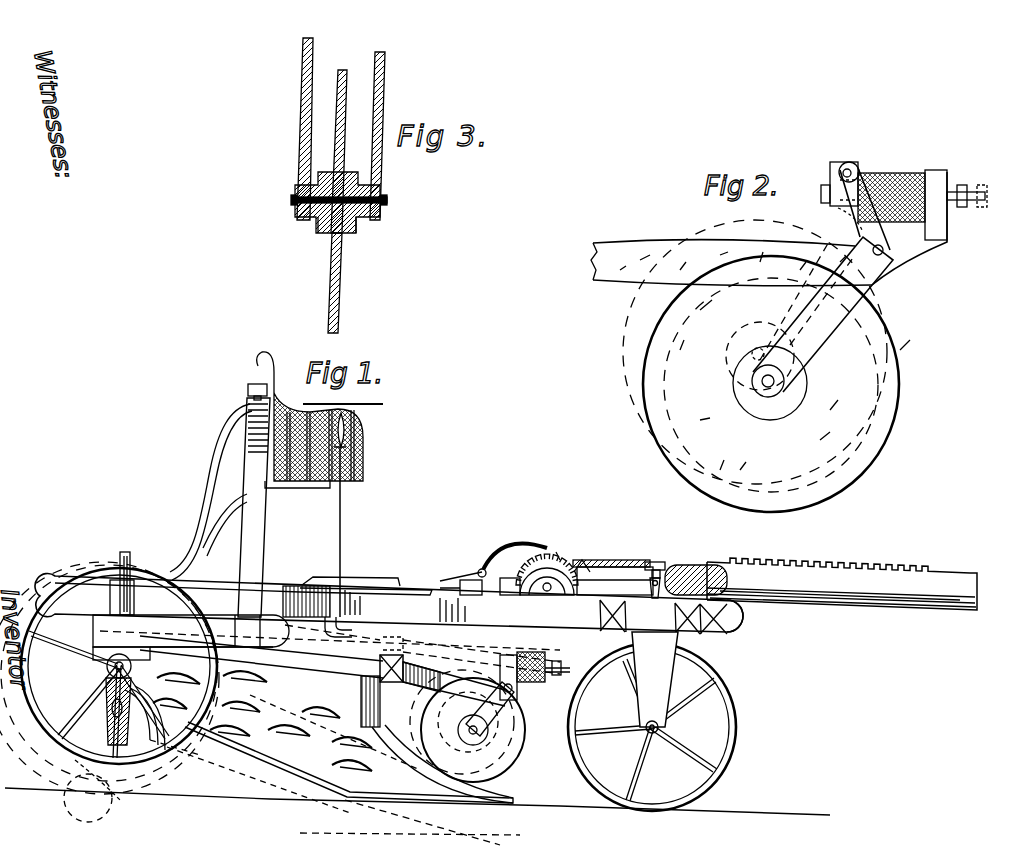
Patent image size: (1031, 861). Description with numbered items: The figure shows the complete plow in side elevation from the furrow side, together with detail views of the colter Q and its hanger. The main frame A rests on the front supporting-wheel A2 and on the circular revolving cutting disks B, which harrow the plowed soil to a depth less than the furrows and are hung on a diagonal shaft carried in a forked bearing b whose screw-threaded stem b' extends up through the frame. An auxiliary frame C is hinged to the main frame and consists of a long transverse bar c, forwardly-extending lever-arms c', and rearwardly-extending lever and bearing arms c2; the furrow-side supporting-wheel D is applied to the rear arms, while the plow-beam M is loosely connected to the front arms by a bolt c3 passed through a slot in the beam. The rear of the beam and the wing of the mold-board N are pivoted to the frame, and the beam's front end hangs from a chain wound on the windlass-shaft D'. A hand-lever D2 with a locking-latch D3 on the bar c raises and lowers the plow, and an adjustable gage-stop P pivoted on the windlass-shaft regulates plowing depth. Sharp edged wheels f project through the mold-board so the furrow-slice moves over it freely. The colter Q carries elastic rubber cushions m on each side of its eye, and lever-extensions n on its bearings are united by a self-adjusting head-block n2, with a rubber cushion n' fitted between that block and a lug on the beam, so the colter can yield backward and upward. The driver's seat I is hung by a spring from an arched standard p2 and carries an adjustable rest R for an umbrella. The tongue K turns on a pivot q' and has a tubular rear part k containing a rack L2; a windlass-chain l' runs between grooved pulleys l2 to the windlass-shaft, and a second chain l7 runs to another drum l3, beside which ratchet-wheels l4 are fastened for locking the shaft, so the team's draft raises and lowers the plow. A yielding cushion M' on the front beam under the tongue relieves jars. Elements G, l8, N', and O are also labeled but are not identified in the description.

In FIG. 1, the main frame A is at (389, 606).
In FIG. 1, the front supporting-wheel A2 is at (728, 734).
In FIG. 1, the circular revolving cutting disks or wheels B is at (114, 750).
In FIG. 1, the forked bearing b is at (115, 705).
In FIG. 1, the stem of the forked bearing b' is at (123, 575).
In FIG. 1, the auxiliary frame C is at (326, 634).
In FIG. 1, the transverse bar c is at (247, 631).
In FIG. 1, the rearwardly-extending lever and bearing arms c2 is at (211, 639).
In FIG. 1, the bolt c3 is at (471, 653).
In FIG. 1, the forwardly-extending lever-arms c' is at (271, 659).
In FIG. 1, the furrow-side supporting-wheel D is at (109, 678).
In FIG. 1, the hand-lever D2 is at (347, 532).
In FIG. 1, the locking-latch D3 is at (341, 576).
In FIG. 1, the windlass-shaft D' is at (589, 552).
In FIG. 1, the sharp or edged wheels f is at (262, 717).
In FIG. 1, the shank G is at (430, 739).
In FIG. 1, the driver's seat I is at (313, 420).
In FIG. 1, the tongue or pole K is at (842, 599).
In FIG. 1, the tubular rear part of the tongue k is at (840, 592).
In FIG. 1, the rack L2 is at (838, 560).
In FIG. 1, the windlass-chain l' is at (628, 576).
In FIG. 1, the grooved horizontal pulleys l2 is at (655, 572).
In FIG. 1, the drum of the windlass-shaft l3 is at (562, 550).
In FIG. 1, the circular ratchet-wheel l4 is at (547, 572).
In FIG. 1, the windlass-chain l7 is at (615, 581).
In FIG. 1, the link l8 is at (512, 560).
In FIG. 2, the plow-beam M is at (769, 229).
In FIG. 1, the plow-beam M is at (454, 684).
In FIG. 1, the rubber or yielding cushion M' is at (743, 625).
In FIG. 3, the elastic cushions or bearings m is at (344, 233).
In FIG. 1, the mold-board N is at (285, 754).
In FIG. 1, the share point N' is at (352, 783).
In FIG. 2, the lever-extensions n is at (846, 205).
In FIG. 1, the lever-extensions n is at (535, 676).
In FIG. 2, the cushion or spring n' is at (891, 190).
In FIG. 1, the cushion or spring n' is at (531, 663).
In FIG. 2, the self-adjusting head-block n2 is at (904, 192).
In FIG. 1, the beam part O is at (360, 598).
In FIG. 1, the adjustable gage-stop P is at (480, 578).
In FIG. 1, the arched standard p2 is at (220, 500).
In FIG. 3, the colter Q is at (345, 185).
In FIG. 2, the colter Q is at (770, 337).
In FIG. 1, the colter Q is at (475, 726).
In FIG. 1, the pivot of the tongue q' is at (696, 569).
In FIG. 1, the rest or arm R is at (348, 399).